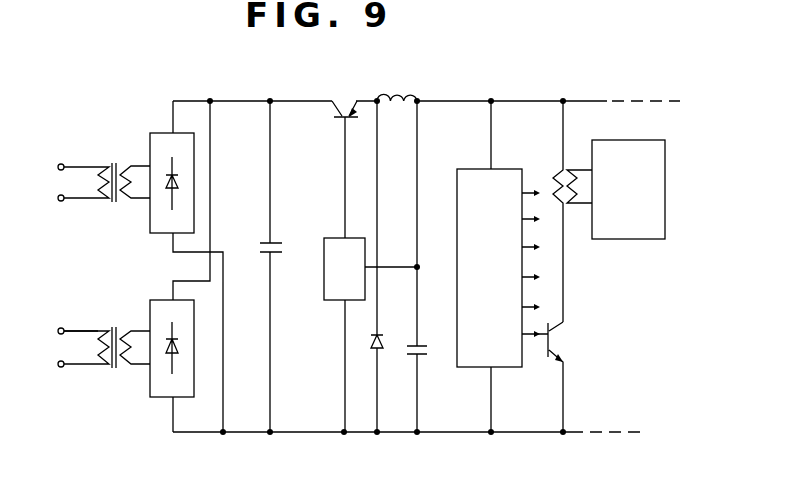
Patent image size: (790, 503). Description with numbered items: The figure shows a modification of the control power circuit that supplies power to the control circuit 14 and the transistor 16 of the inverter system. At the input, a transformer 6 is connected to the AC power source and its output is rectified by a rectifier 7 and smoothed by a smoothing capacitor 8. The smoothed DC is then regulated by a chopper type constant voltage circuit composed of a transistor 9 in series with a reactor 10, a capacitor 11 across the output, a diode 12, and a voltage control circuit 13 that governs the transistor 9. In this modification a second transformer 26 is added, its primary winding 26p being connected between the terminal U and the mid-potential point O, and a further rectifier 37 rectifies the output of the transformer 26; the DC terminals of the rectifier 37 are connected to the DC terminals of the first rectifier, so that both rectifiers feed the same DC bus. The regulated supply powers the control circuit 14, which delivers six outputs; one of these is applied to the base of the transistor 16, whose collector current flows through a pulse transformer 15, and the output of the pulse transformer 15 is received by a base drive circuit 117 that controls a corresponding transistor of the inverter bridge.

The transformer 6 is at (113, 162).
The rectifier 7 is at (165, 132).
The smoothing capacitor 8 is at (286, 250).
The transistor 9 is at (342, 105).
The reactor 10 is at (393, 95).
The capacitor 11 is at (426, 350).
The diode 12 is at (381, 341).
The voltage control circuit 13 is at (336, 301).
The control circuit 14 is at (510, 168).
The pulse transformer 15 is at (570, 175).
The transistor 16 is at (558, 338).
The base drive circuit 117 is at (666, 193).
The transformer 26 is at (116, 369).
The primary winding 26p is at (100, 337).
The rectifier 37 is at (165, 400).